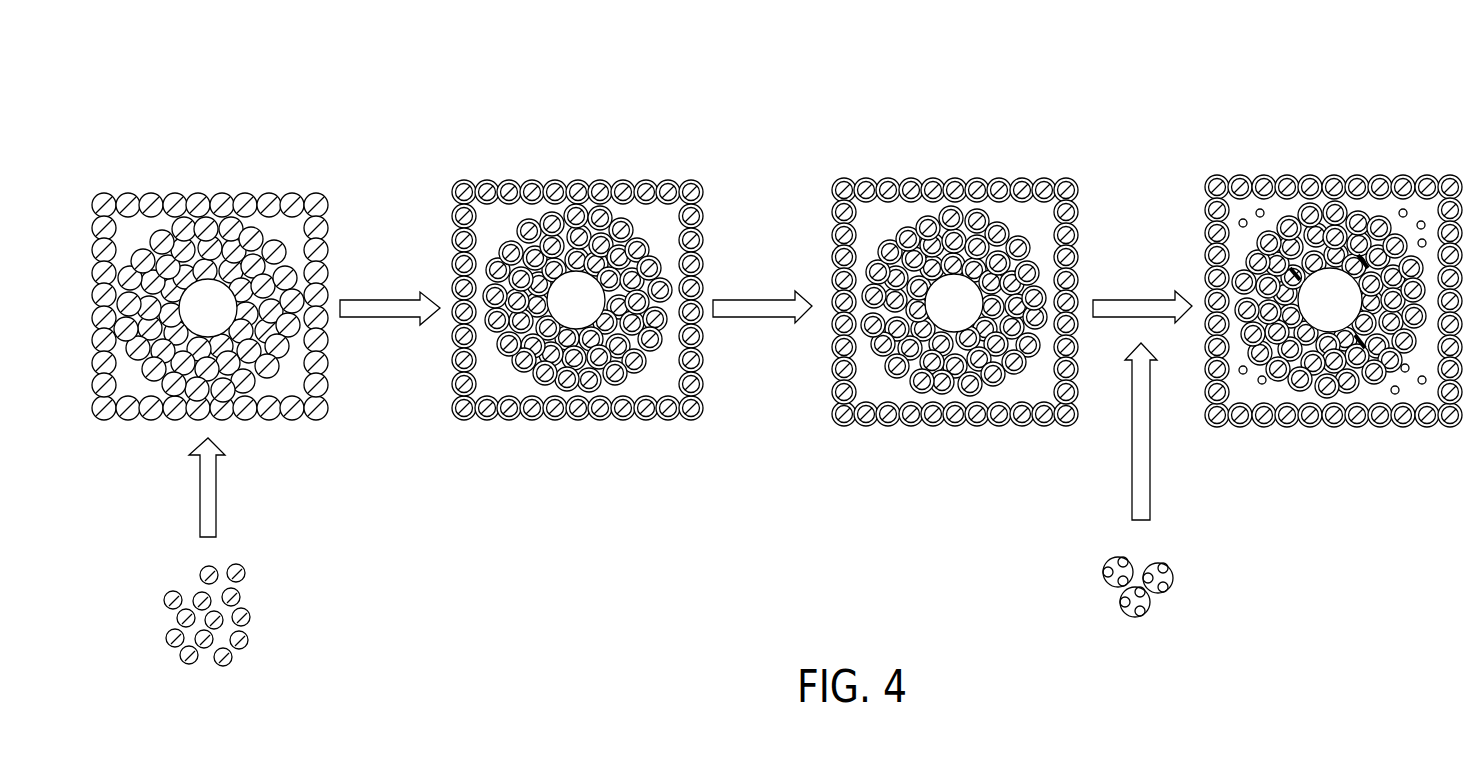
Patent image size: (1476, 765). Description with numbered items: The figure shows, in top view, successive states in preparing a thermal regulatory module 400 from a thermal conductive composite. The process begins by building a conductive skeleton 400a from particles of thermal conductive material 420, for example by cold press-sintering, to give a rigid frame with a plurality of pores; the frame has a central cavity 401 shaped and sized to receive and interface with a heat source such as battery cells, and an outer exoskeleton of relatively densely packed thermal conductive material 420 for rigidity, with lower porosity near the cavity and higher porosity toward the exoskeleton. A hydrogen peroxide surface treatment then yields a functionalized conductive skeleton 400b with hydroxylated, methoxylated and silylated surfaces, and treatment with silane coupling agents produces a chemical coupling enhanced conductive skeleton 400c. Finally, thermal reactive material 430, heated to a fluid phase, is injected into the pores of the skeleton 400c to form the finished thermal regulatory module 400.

The conductive skeleton 400a is at (207, 128).
The functionalized conductive skeleton 400b is at (563, 120).
The chemical coupling enhanced conductive skeleton 400c is at (954, 150).
The thermal regulatory module 400 is at (1330, 150).
The cavity 401 is at (212, 293).
The thermal conductive material 420 is at (253, 200).
The thermal reactive material 430 is at (1275, 405).